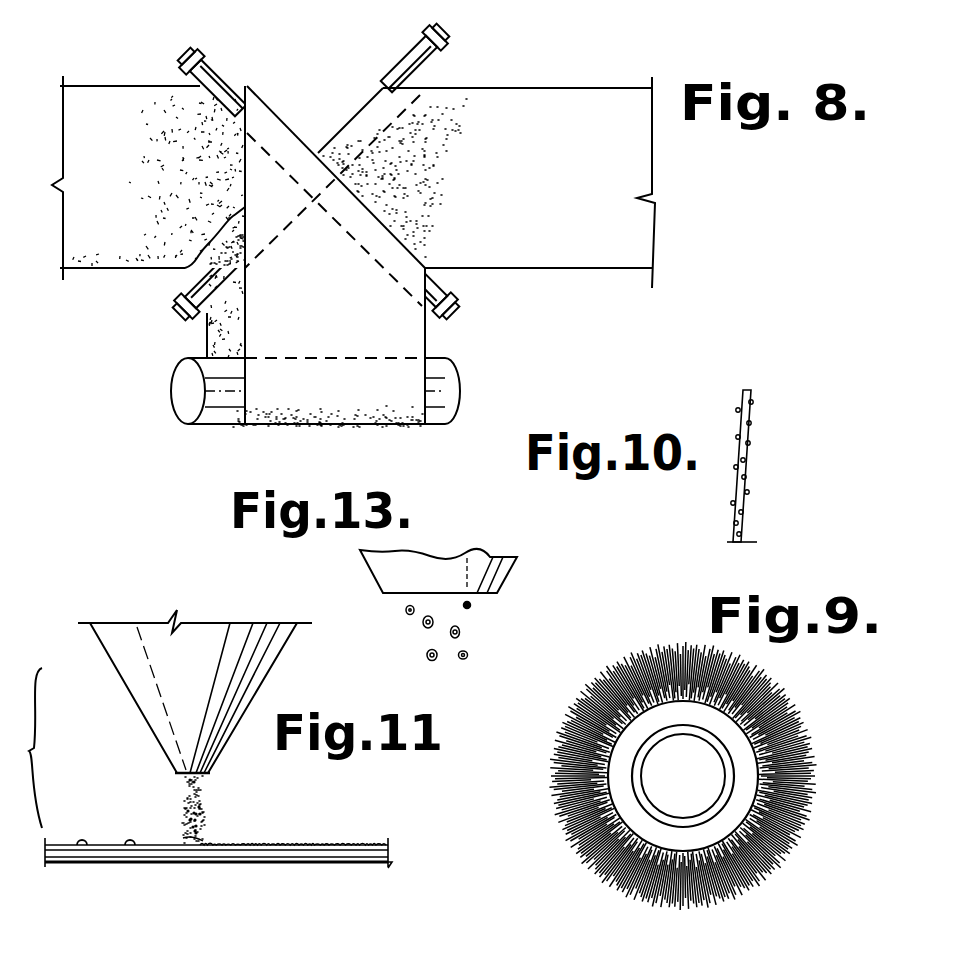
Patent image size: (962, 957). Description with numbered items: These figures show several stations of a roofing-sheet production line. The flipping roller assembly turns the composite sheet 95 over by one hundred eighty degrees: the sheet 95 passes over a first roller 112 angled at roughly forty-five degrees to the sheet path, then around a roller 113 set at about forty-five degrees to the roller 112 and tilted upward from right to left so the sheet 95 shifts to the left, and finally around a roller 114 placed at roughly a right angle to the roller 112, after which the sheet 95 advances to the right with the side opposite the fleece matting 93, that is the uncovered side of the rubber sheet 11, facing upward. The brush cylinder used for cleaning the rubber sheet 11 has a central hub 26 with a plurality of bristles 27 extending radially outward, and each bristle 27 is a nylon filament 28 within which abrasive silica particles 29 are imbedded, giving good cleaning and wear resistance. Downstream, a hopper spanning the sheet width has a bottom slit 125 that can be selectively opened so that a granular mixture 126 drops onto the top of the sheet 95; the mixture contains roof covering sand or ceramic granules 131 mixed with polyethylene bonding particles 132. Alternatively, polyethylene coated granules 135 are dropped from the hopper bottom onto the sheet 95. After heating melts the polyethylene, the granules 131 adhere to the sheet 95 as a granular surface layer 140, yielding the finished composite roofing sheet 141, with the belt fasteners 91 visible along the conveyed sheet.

In FIG. 8, the sheet 95 is at (123, 144).
In FIG. 8, the first roller 112 is at (224, 66).
In FIG. 8, the roller 113 is at (220, 425).
In FIG. 8, the roller 114 is at (188, 280).
In FIG. 10, the bristles 27 is at (781, 458).
In FIG. 9, the bristles 27 is at (622, 658).
In FIG. 10, the nylon filament 28 is at (753, 410).
In FIG. 10, the abrasive silica particles 29 is at (747, 533).
In FIG. 9, the central hub 26 is at (618, 780).
In FIG. 13, the coated granules 135 is at (470, 650).
In FIG. 11, the bottom slit 125 is at (178, 775).
In FIG. 11, the granular mixture 126 is at (276, 768).
In FIG. 11, the roof covering granules 131 is at (189, 838).
In FIG. 11, the polyethylene particles 132 is at (205, 820).
In FIG. 11, the finished composite roofing sheet 141 is at (320, 836).
In FIG. 11, the granular surface layer 140 is at (360, 843).
In FIG. 11, the fleece matting 93 is at (183, 864).
In FIG. 11, the rubber sheet 11 is at (78, 851).
In FIG. 11, the belt fastener / loop 91 is at (126, 851).